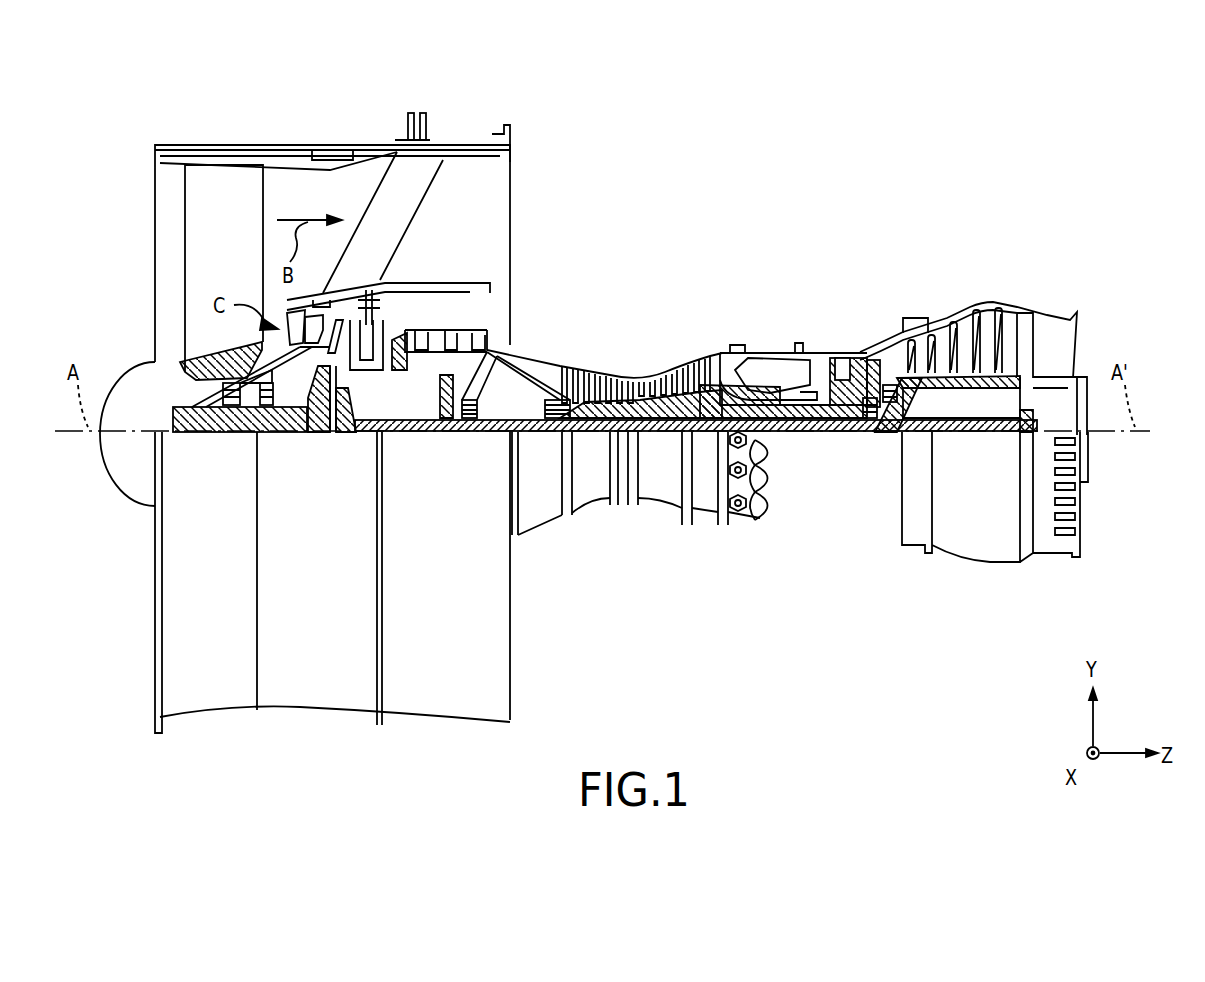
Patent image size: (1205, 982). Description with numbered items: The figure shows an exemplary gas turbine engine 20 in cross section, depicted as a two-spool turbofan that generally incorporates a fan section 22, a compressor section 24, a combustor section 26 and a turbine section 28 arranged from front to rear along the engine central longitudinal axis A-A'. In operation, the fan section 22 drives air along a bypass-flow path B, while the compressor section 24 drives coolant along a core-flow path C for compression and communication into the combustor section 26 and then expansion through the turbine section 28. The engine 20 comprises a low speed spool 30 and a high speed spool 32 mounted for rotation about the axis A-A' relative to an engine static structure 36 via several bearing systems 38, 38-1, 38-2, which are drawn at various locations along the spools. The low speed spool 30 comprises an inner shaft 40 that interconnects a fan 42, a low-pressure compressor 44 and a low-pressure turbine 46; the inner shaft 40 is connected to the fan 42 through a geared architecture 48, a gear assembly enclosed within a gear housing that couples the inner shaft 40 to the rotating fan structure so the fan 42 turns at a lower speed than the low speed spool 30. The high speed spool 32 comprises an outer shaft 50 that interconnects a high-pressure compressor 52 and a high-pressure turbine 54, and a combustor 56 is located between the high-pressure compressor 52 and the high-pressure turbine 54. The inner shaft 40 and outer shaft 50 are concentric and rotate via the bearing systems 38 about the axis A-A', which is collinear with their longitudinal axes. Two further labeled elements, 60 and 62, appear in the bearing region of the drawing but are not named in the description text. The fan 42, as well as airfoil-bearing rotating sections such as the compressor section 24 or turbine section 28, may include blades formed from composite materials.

The gas turbine engine 20 is at (818, 148).
The fan section 22 is at (355, 129).
The compressor section 24 is at (727, 243).
The combustor section 26 is at (825, 243).
The turbine section 28 is at (1025, 243).
The low speed spool 30 is at (668, 432).
The high speed spool 32 is at (712, 368).
The engine static structure 36 is at (710, 507).
The bearing system 38 is at (887, 420).
The bearing system 38-1 is at (235, 415).
The bearing system 38-2 is at (465, 433).
The inner shaft 40 is at (527, 440).
The fan 42 is at (224, 278).
The low-pressure compressor 44 is at (449, 340).
The low-pressure turbine 46 is at (958, 312).
The geared architecture 48 is at (336, 456).
The outer shaft 50 is at (770, 415).
The high-pressure compressor 52 is at (680, 388).
The high-pressure turbine 54 is at (838, 352).
The combustor 56 is at (780, 366).
The bearing 60 is at (350, 398).
The bearing support 62 is at (350, 380).